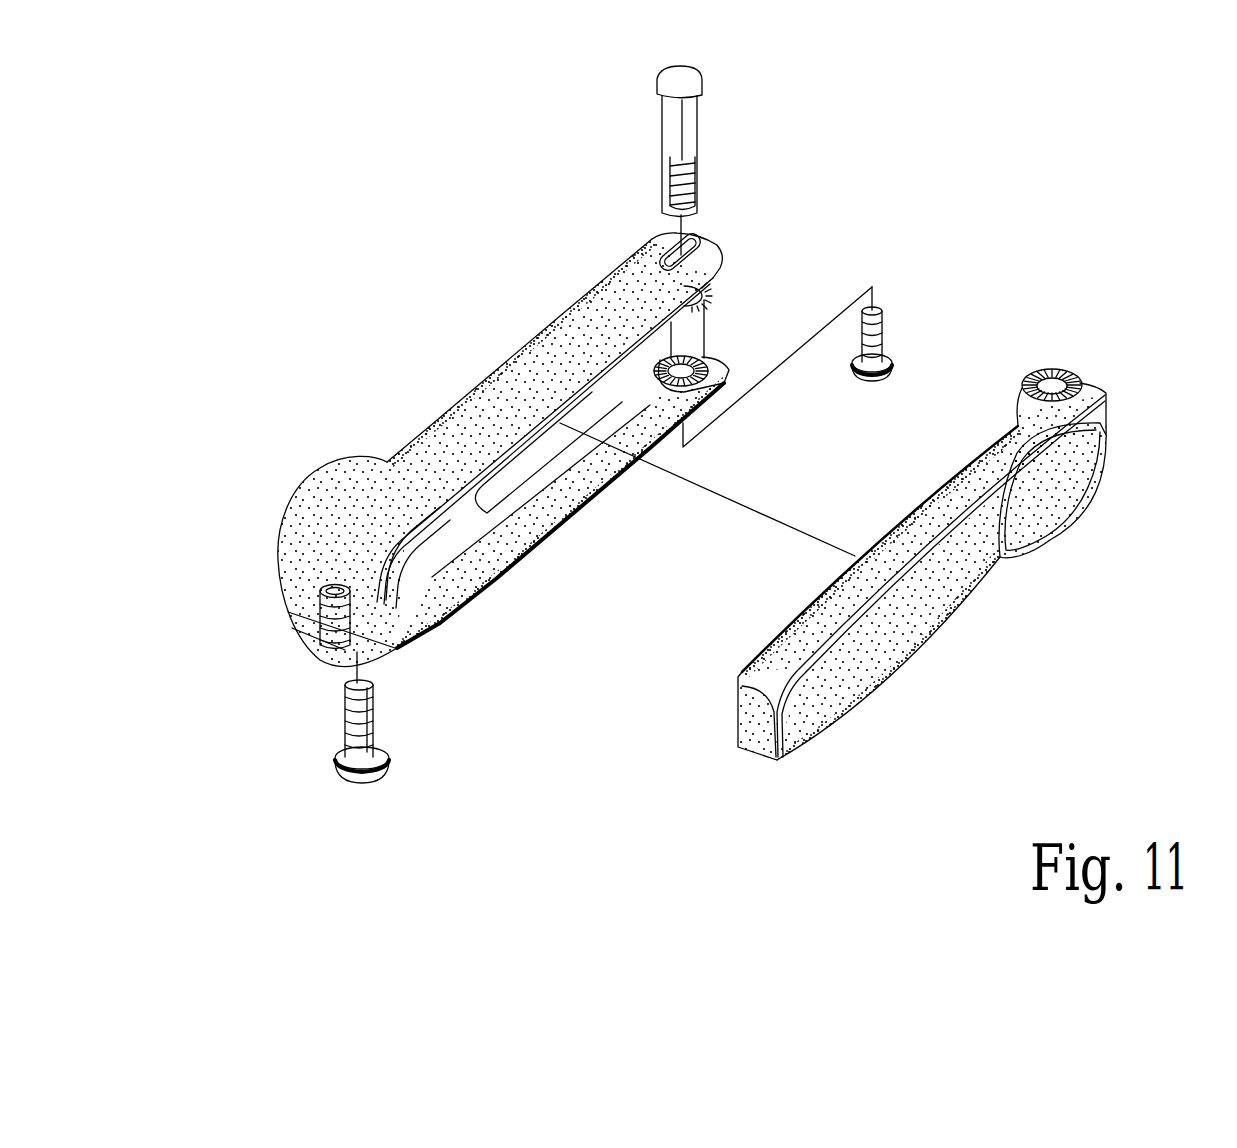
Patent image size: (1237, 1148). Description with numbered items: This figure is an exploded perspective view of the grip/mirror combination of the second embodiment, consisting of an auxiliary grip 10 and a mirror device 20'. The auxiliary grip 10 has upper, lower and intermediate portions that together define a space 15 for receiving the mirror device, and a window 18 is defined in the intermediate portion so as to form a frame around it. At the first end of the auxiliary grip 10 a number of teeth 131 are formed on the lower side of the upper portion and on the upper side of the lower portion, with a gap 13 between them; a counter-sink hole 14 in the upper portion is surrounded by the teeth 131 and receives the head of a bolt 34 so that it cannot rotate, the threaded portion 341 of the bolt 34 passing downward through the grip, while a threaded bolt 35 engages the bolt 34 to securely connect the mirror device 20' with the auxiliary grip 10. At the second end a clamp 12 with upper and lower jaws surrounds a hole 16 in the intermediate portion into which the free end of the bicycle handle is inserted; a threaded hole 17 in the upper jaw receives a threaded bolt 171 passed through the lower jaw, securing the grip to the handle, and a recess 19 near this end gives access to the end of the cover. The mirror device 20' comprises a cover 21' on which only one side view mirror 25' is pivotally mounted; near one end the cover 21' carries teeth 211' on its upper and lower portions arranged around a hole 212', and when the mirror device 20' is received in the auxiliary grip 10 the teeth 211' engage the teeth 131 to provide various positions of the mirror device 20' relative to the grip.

The auxiliary grip 10 is at (450, 398).
The clamp 12 is at (360, 527).
The gap 13 is at (688, 329).
The counter-sink hole 14 is at (657, 252).
The space 15 is at (450, 540).
The hole 16 is at (403, 573).
The threaded hole 17 is at (300, 592).
The window 18 is at (640, 372).
The recess 19 is at (356, 680).
The threaded bolt 171 is at (336, 752).
The teeth 131 is at (705, 298).
The pivot pin 34 is at (690, 103).
The threaded portion 341 is at (690, 170).
The threaded bolt 35 is at (885, 340).
The mirror device 20' is at (922, 576).
The cover 21' is at (941, 576).
The side view mirror 25' is at (880, 549).
The teeth 211' is at (1082, 339).
The hole 212' is at (1042, 343).